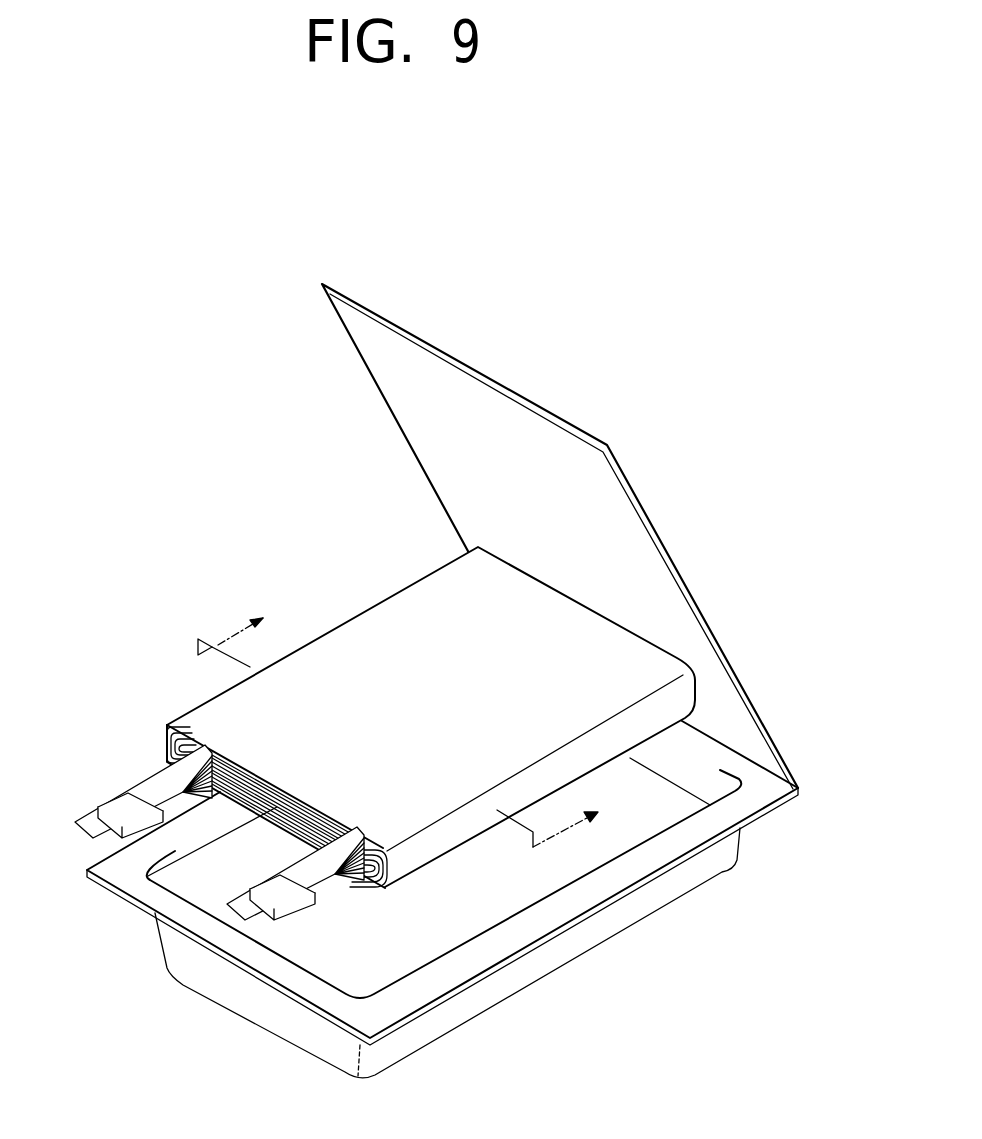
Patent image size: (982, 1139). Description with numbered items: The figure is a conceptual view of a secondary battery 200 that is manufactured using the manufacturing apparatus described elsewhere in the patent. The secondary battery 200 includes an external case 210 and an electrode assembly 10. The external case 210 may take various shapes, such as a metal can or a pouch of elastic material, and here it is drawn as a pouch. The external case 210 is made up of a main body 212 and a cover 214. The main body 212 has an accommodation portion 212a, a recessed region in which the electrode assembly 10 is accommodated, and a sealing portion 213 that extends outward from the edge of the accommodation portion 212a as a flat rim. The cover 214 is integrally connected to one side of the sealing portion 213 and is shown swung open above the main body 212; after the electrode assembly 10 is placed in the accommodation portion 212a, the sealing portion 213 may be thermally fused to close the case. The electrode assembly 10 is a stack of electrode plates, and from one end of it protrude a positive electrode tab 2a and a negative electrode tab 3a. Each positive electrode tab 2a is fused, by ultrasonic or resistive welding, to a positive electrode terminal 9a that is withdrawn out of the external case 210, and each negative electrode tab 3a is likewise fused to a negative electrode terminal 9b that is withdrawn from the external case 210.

The secondary battery 200 is at (200, 398).
The electrode assembly 10 is at (333, 620).
The positive electrode tab 2a is at (173, 778).
The negative electrode tab 3a is at (322, 858).
The positive electrode terminal 9a is at (92, 827).
The negative electrode terminal 9b is at (238, 912).
The external case 210 is at (597, 955).
The main body 212 is at (685, 887).
The accommodation portion 212a is at (360, 983).
The sealing portion 213 is at (297, 975).
The cover 214 is at (748, 731).